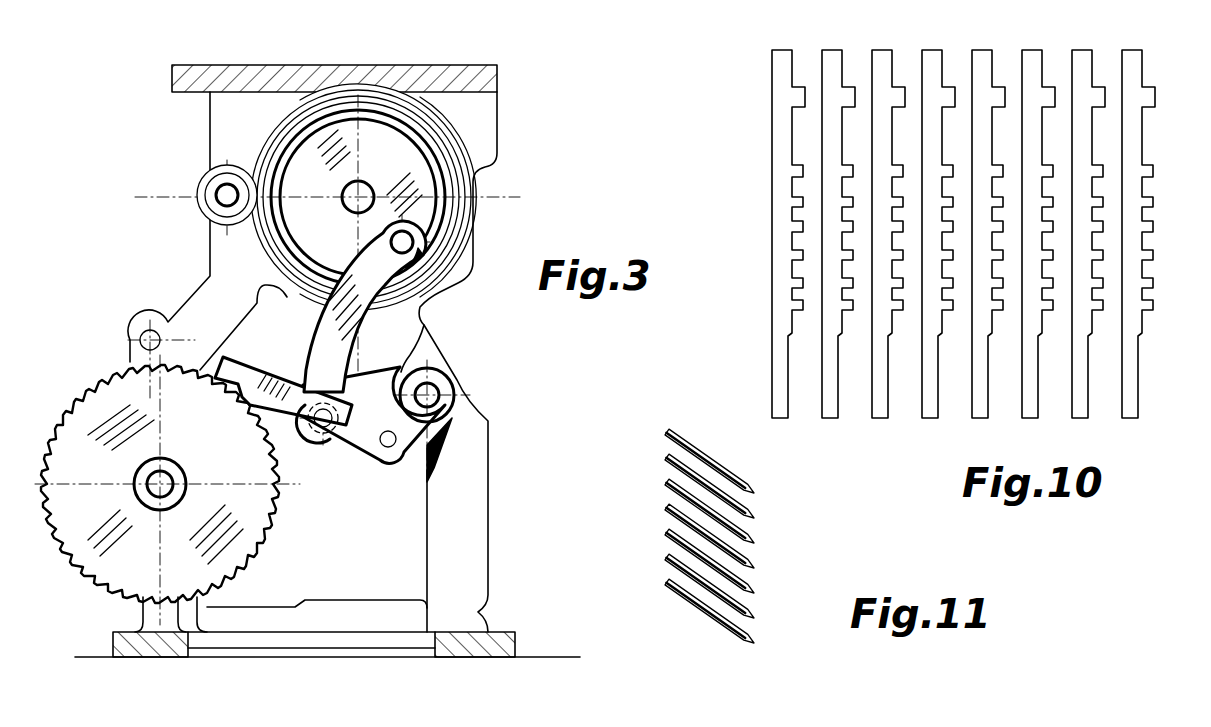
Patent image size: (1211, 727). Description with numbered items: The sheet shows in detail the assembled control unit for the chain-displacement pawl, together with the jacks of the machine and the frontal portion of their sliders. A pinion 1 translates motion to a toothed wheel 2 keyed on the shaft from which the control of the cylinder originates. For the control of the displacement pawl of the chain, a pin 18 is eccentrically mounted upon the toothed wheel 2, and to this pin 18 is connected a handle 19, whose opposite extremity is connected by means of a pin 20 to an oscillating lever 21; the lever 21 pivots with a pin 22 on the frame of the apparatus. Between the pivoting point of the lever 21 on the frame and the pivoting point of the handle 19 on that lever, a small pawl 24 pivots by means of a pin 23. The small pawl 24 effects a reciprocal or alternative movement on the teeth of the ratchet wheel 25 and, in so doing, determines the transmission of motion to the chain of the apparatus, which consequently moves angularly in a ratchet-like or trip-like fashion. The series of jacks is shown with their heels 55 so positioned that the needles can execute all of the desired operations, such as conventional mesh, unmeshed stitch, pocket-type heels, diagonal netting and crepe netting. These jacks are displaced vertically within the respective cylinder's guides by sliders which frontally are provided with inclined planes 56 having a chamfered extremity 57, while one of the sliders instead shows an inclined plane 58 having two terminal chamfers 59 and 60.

In FIG. 3, the pinion 1 is at (208, 194).
In FIG. 3, the toothed wheel 2 is at (388, 97).
In FIG. 3, the pin 18 is at (416, 238).
In FIG. 3, the handle 19 is at (318, 325).
In FIG. 3, the pin 20 is at (320, 440).
In FIG. 3, the oscillating lever 21 is at (437, 327).
In FIG. 3, the pin 22 is at (440, 389).
In FIG. 3, the pin 23 is at (380, 452).
In FIG. 3, the small pawl 24 is at (255, 378).
In FIG. 3, the ratchet wheel 25 is at (88, 412).
In FIG. 10, the heels 55 is at (797, 201).
In FIG. 11, the inclined planes 56 is at (705, 458).
In FIG. 11, the chamfered extremity 57 is at (752, 498).
In FIG. 11, the inclined plane 58 is at (713, 510).
In FIG. 11, the terminal chamfer 59 is at (675, 490).
In FIG. 11, the terminal chamfer 60 is at (750, 550).